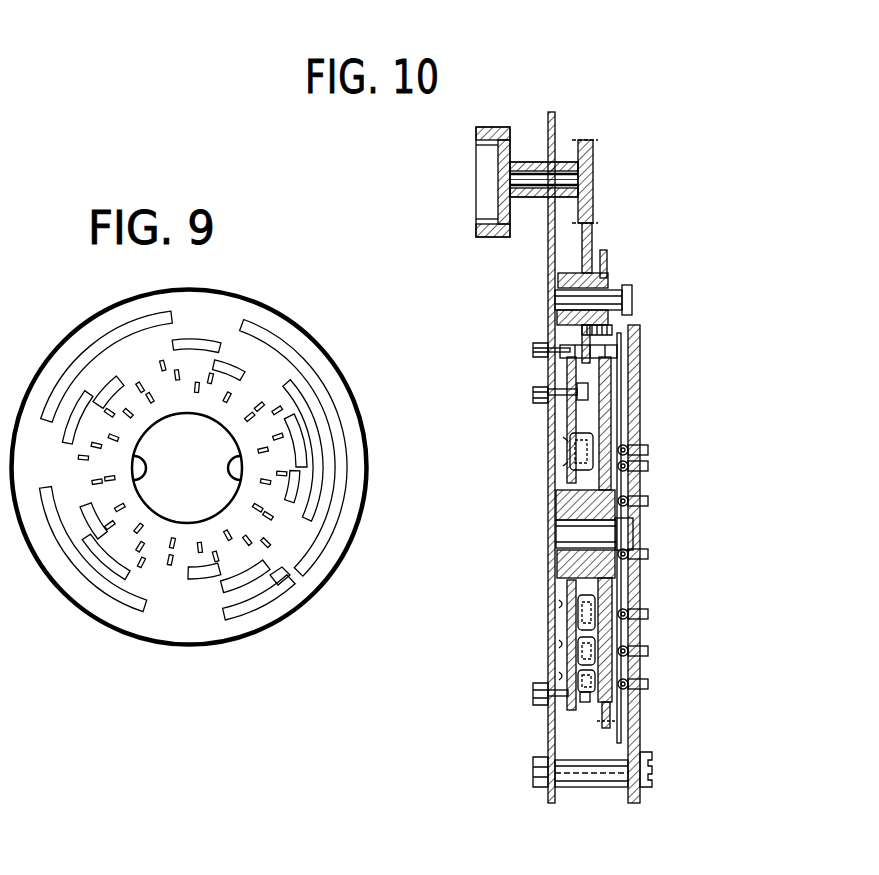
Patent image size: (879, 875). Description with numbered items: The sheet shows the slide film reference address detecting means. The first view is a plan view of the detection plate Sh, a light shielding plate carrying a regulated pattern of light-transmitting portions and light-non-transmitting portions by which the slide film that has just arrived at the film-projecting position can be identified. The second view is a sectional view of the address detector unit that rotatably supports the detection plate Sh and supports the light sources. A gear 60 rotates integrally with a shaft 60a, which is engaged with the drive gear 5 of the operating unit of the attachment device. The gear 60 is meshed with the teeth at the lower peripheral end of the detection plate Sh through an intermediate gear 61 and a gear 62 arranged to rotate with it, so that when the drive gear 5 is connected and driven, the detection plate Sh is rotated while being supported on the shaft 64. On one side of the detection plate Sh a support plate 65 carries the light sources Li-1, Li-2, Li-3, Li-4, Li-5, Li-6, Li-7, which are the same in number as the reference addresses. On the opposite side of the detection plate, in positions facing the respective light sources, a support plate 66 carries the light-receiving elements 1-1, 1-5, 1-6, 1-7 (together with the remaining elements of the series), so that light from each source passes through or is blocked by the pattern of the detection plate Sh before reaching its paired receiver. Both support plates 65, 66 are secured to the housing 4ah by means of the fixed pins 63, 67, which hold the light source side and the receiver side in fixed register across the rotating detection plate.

In FIG. 9, the detection plate Sh is at (268, 352).
In FIG. 10, the detection plate Sh is at (623, 350).
In FIG. 10, the housing 4ah is at (555, 122).
In FIG. 10, the drive gear 5 is at (491, 128).
In FIG. 10, the gear 60 is at (594, 160).
In FIG. 10, the shaft 60a is at (594, 182).
In FIG. 10, the intermediate gear 61 is at (594, 236).
In FIG. 10, the gear 62 is at (608, 262).
In FIG. 10, the fixed pin 63 is at (615, 340).
In FIG. 10, the shaft 64 is at (570, 506).
In FIG. 10, the support plate 65 is at (641, 378).
In FIG. 10, the support plate 66 is at (572, 418).
In FIG. 10, the fixed pin 67 is at (562, 350).
In FIG. 10, the light-receiving element 1-1 is at (578, 455).
In FIG. 10, the light-receiving element 1-5 is at (584, 612).
In FIG. 10, the light-receiving element 1-6 is at (584, 655).
In FIG. 10, the light-receiving element 1-7 is at (584, 686).
In FIG. 10, the light source Li-1 is at (636, 450).
In FIG. 10, the light source Li-2 is at (648, 466).
In FIG. 10, the light source Li-3 is at (648, 501).
In FIG. 10, the light source Li-4 is at (648, 554).
In FIG. 10, the light source Li-5 is at (648, 614).
In FIG. 10, the light source Li-6 is at (648, 651).
In FIG. 10, the light source Li-7 is at (648, 684).